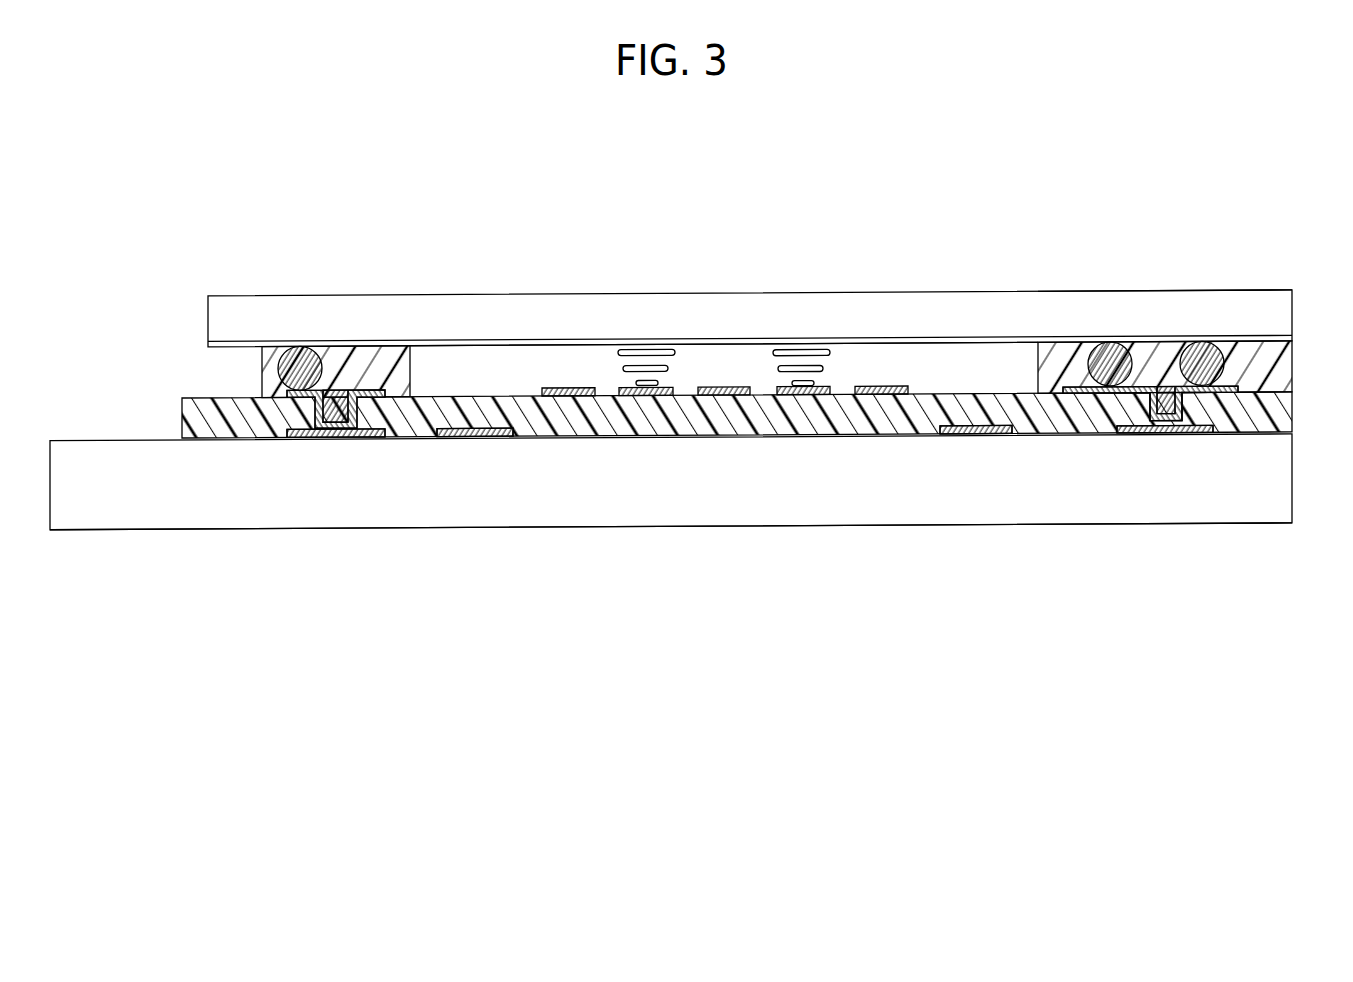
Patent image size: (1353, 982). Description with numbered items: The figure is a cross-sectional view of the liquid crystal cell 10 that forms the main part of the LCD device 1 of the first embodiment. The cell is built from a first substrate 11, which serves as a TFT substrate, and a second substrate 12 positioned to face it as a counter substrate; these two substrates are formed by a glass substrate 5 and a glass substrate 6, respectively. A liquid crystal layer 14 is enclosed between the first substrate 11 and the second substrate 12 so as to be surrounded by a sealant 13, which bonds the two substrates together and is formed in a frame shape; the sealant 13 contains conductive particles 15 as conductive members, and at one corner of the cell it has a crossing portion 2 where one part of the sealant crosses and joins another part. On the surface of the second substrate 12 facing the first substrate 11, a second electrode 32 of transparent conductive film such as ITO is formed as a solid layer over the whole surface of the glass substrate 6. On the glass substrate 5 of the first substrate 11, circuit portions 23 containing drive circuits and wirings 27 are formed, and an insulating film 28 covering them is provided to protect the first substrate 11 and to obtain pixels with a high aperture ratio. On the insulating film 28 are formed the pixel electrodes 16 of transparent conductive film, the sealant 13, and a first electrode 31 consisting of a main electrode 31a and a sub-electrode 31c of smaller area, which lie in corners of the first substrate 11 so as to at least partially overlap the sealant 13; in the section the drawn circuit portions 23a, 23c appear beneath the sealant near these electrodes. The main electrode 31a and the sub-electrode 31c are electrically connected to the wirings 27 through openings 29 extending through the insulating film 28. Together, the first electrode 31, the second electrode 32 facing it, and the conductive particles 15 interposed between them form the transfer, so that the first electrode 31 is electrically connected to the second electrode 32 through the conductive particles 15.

The LCD device 1 is at (195, 145).
The liquid crystal cell 10 is at (701, 342).
The crossing portion 2 is at (1242, 352).
The glass substrate 5 is at (1277, 485).
The glass substrate 6 is at (1277, 322).
The first substrate 11 is at (162, 531).
The second substrate 12 is at (237, 297).
The sealant 13 is at (330, 362).
The liquid crystal layer 14 is at (440, 362).
The conductive particles 15 is at (298, 349).
The pixel electrode 16 is at (738, 400).
The circuit portions 23 is at (731, 507).
The terminal 23a is at (975, 442).
The terminal 23c is at (478, 441).
The wirings 27 is at (368, 440).
The insulating film 28 is at (1277, 414).
The openings 29 is at (347, 402).
The first electrode 31 is at (787, 506).
The main electrode 31a is at (1238, 402).
The sub-electrode 31c is at (305, 400).
The second electrode 32 is at (992, 344).